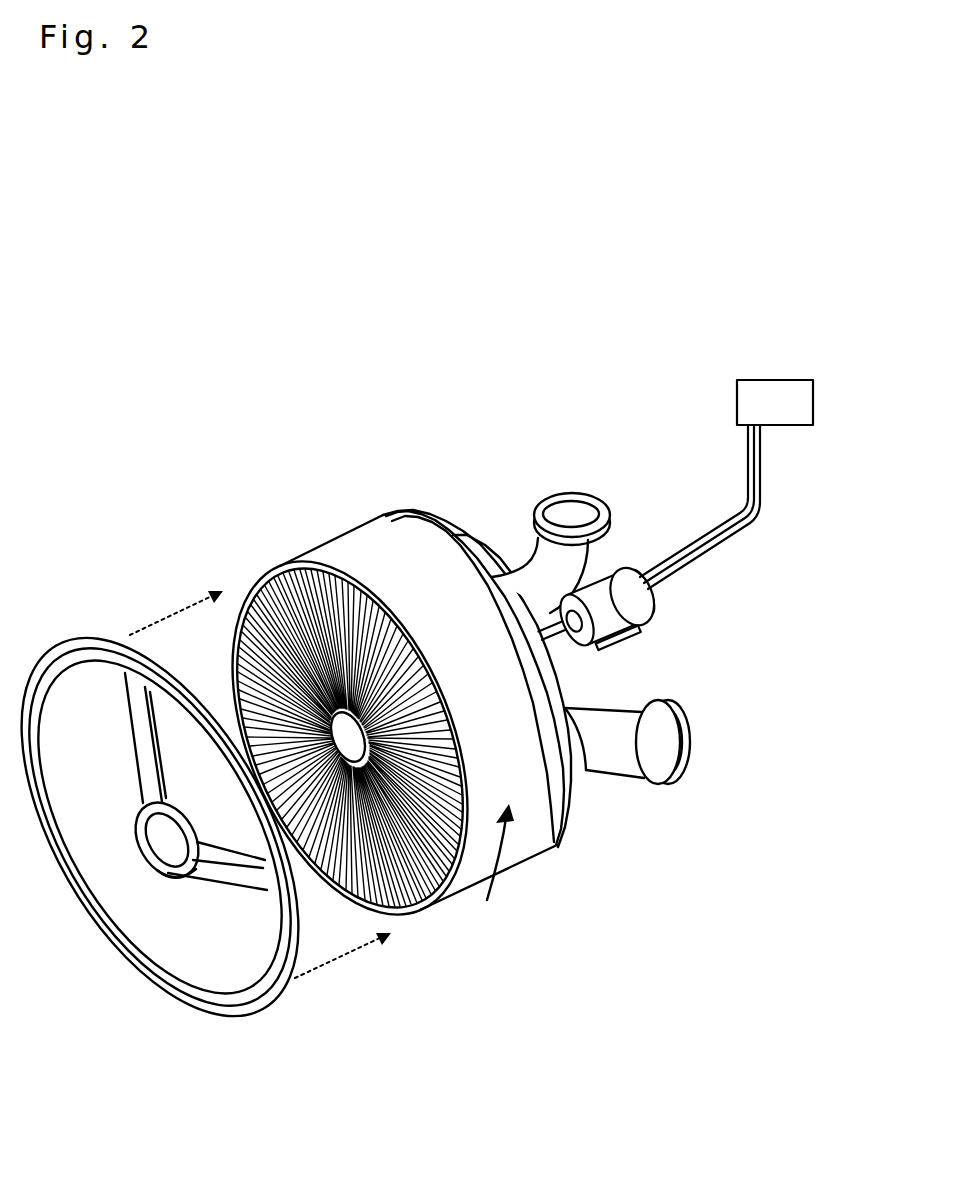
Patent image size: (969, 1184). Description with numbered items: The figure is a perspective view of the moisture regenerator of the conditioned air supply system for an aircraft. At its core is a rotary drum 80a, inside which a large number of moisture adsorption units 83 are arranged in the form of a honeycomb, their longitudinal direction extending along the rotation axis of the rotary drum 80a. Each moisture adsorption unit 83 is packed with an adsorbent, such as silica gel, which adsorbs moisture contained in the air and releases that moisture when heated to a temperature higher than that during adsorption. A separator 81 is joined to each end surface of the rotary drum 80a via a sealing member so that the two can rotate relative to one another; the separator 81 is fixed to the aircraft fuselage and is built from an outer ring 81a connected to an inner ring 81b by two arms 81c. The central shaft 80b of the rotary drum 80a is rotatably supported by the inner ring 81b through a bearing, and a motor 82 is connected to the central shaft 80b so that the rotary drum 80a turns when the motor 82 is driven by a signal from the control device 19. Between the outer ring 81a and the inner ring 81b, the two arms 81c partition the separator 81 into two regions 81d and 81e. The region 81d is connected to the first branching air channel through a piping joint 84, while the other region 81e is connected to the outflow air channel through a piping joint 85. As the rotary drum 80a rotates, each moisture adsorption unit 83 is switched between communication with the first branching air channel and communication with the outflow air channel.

The control device 19 is at (757, 390).
The rotary drum 80a is at (352, 550).
The central shaft 80b is at (362, 892).
The separator 81 is at (548, 842).
The outer ring 81a is at (137, 953).
The inner ring 81b is at (173, 868).
The arms 81c is at (143, 733).
The region 81d is at (220, 794).
The region 81e is at (126, 829).
The motor 82 is at (627, 618).
The moisture adsorption unit 83 is at (418, 918).
The piping joint 84 is at (580, 509).
The piping joint 85 is at (622, 760).